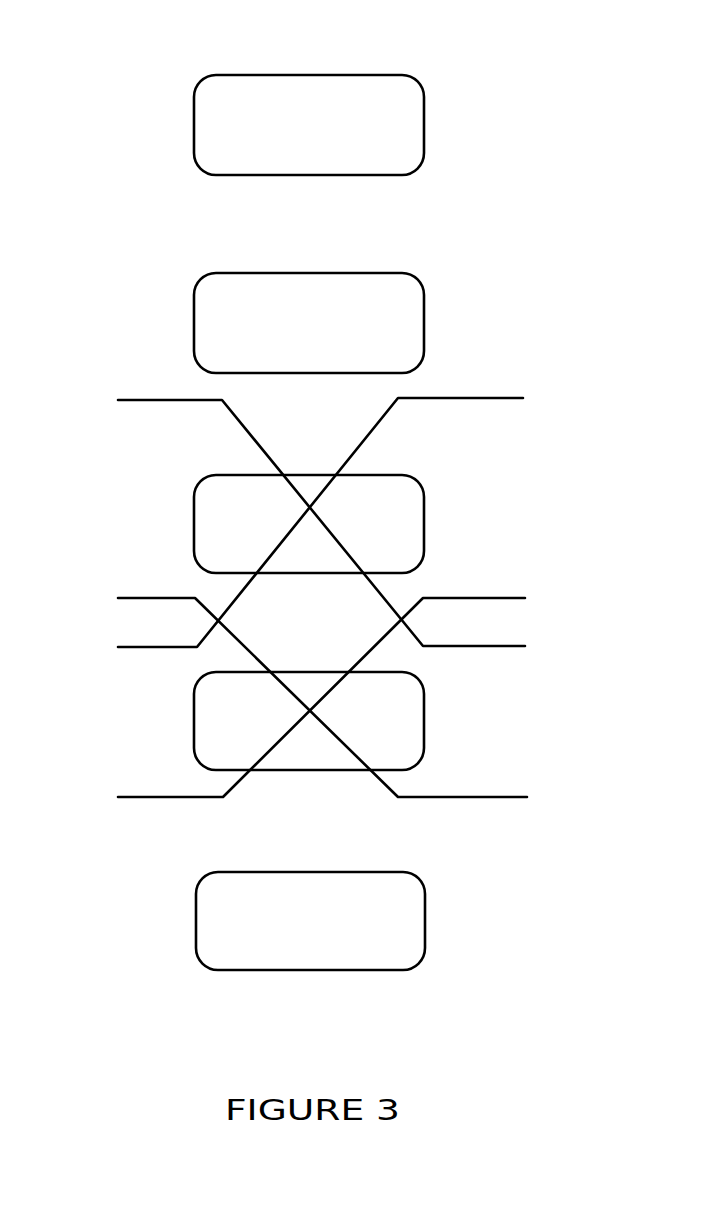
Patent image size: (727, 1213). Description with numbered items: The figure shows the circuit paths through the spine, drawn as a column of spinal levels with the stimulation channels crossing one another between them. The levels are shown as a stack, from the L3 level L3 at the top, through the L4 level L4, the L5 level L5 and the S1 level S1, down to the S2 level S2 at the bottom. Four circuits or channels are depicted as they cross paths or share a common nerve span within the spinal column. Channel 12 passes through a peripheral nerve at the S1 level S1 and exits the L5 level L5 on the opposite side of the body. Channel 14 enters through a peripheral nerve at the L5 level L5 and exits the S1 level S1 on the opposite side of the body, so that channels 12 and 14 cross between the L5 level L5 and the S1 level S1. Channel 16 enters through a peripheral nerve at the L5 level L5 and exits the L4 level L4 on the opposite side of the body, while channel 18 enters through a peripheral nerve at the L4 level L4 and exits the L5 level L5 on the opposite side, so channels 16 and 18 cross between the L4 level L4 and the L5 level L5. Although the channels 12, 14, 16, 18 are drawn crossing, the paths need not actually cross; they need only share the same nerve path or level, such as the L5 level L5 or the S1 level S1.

The channel 12 is at (317, 700).
The channel 14 is at (324, 699).
The channel 16 is at (317, 526).
The channel 18 is at (317, 525).
The L3 level L3 is at (307, 75).
The L4 level L4 is at (308, 273).
The L5 level L5 is at (424, 523).
The S1 level S1 is at (424, 722).
The S2 level S2 is at (425, 918).